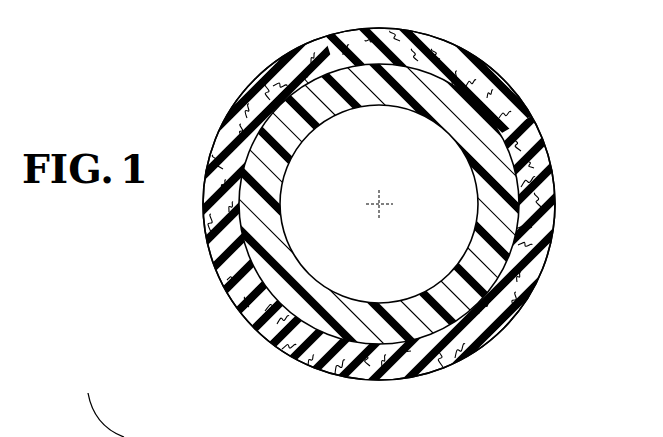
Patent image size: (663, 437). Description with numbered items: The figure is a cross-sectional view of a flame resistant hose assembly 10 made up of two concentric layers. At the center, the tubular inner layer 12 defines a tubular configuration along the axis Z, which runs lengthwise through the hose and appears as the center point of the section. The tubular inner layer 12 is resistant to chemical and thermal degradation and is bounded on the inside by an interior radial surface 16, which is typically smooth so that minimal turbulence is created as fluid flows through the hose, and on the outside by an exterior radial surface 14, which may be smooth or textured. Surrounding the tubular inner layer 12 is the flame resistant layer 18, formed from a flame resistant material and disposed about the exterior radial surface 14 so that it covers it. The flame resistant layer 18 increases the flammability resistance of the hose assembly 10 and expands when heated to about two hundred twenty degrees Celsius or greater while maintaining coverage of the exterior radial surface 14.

The hose assembly 10 is at (221, 66).
The tubular inner layer 12 is at (410, 329).
The exterior radial surface 14 is at (527, 204).
The interior radial surface 16 is at (283, 202).
The flame resistant layer 18 is at (498, 314).
The axis Z is at (382, 202).